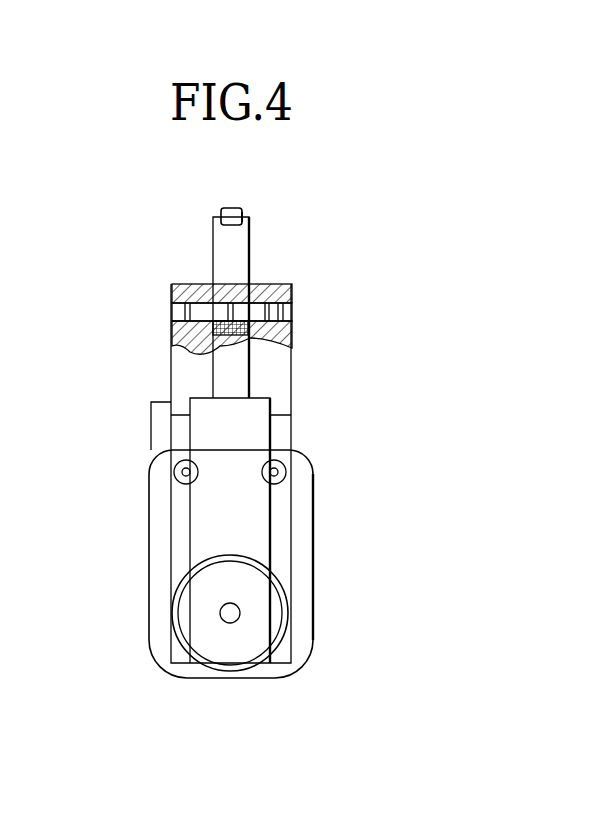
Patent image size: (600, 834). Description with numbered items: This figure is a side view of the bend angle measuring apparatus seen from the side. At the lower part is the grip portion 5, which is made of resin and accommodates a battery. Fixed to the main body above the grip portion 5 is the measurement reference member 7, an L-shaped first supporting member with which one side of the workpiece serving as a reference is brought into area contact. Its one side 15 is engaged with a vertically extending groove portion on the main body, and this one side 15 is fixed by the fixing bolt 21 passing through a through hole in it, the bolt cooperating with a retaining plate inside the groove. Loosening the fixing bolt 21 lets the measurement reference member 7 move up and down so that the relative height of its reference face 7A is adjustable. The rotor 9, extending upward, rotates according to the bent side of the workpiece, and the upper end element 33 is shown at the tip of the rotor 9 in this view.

The grip portion 5 is at (313, 508).
The measurement reference member 7 is at (274, 548).
The reference face 7A is at (258, 397).
The rotor 9 is at (240, 245).
The one side 15 is at (202, 542).
The fixing bolt 21 is at (257, 640).
The stopper cap 33 is at (236, 204).